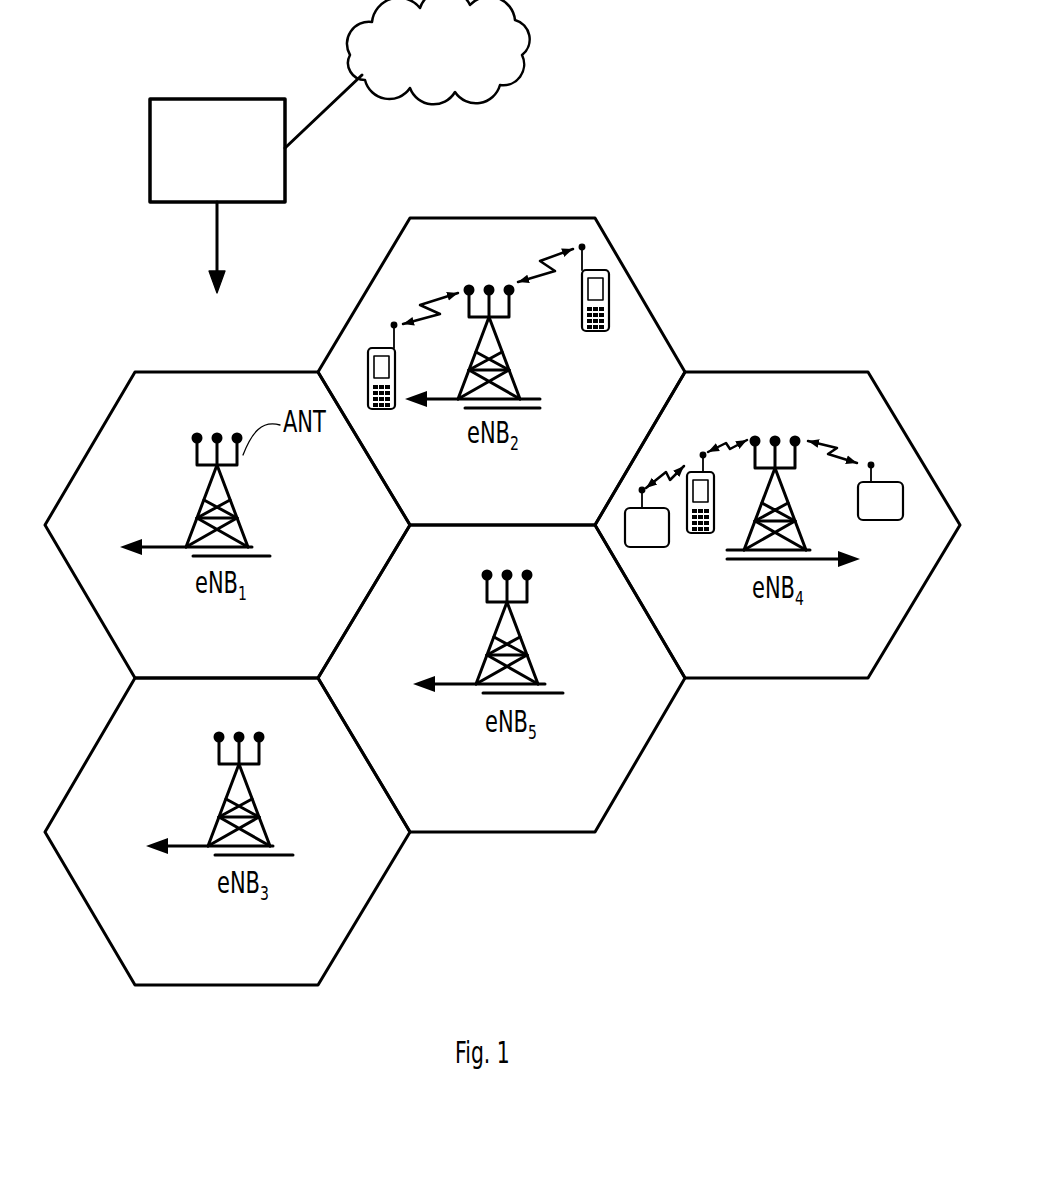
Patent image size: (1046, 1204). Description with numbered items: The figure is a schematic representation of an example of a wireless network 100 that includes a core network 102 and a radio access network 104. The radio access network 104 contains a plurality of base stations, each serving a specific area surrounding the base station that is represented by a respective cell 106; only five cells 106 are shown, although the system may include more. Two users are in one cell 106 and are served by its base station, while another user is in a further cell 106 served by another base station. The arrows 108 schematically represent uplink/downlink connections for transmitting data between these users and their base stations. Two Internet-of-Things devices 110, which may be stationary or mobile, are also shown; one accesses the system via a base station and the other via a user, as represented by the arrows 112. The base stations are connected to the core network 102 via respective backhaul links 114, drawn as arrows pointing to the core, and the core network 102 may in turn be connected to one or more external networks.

The wireless network 100 is at (902, 131).
The core network 102 is at (150, 148).
The radio access network 104 is at (648, 830).
The cells 106 is at (502, 601).
The uplink/downlink connections 108 is at (447, 292).
The IoT devices 110 is at (882, 542).
The arrows representing IoT access connections 112 is at (677, 466).
The backhaul links 114 is at (212, 236).